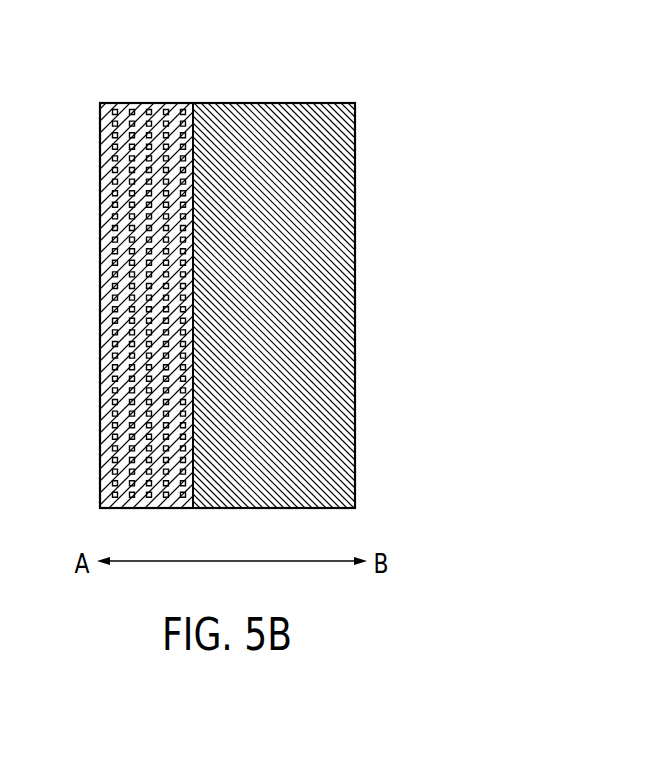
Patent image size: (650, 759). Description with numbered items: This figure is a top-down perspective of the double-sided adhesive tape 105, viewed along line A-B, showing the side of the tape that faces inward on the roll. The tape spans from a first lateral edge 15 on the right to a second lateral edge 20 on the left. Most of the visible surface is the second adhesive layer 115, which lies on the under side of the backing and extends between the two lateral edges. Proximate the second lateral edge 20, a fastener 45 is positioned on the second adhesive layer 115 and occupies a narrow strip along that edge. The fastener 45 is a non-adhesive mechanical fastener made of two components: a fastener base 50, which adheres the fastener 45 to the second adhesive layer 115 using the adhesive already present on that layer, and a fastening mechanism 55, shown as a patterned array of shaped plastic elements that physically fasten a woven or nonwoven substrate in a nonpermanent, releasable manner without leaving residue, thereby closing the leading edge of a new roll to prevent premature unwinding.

The adhesive tape 105 is at (440, 65).
The first lateral edge 15 is at (355, 167).
The second adhesive layer 115 is at (332, 463).
The fastener 45 is at (155, 74).
The fastener base 50 is at (103, 143).
The second lateral edge 20 is at (102, 190).
The fastening mechanism 55 is at (112, 227).